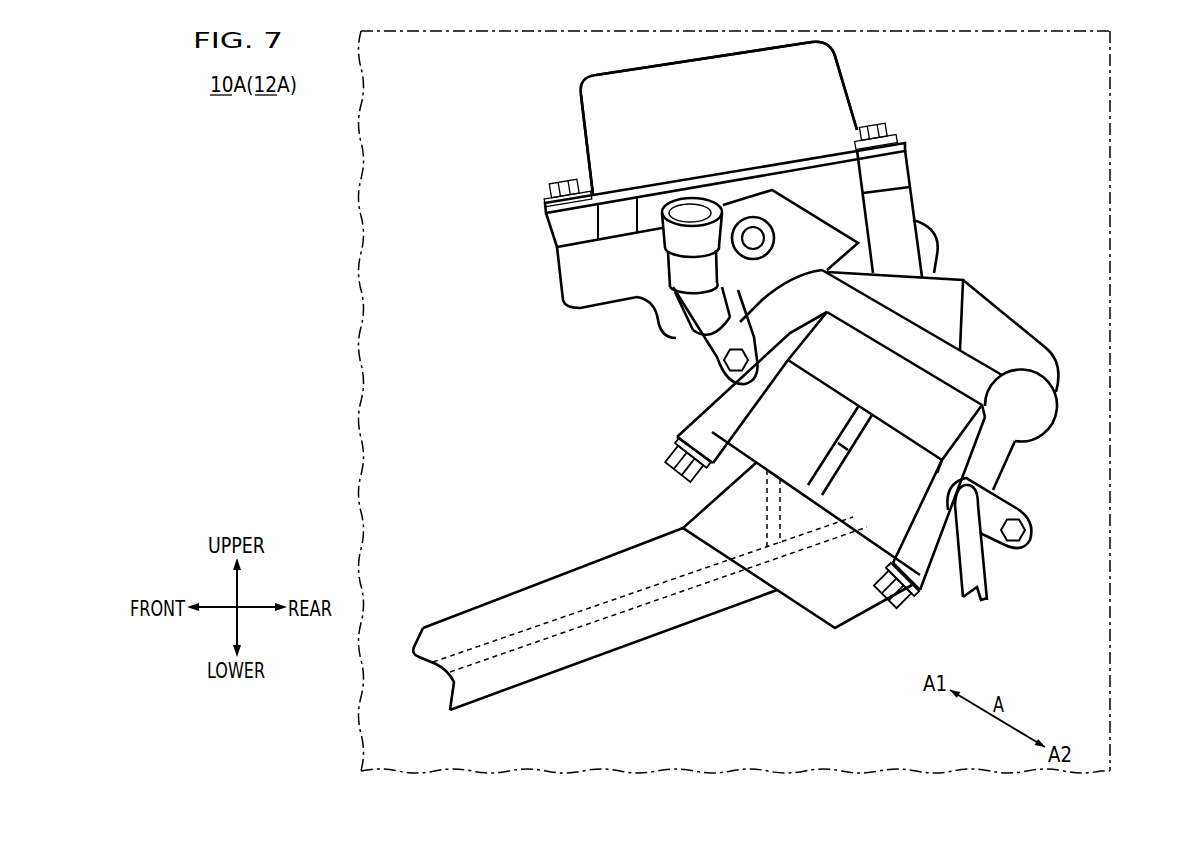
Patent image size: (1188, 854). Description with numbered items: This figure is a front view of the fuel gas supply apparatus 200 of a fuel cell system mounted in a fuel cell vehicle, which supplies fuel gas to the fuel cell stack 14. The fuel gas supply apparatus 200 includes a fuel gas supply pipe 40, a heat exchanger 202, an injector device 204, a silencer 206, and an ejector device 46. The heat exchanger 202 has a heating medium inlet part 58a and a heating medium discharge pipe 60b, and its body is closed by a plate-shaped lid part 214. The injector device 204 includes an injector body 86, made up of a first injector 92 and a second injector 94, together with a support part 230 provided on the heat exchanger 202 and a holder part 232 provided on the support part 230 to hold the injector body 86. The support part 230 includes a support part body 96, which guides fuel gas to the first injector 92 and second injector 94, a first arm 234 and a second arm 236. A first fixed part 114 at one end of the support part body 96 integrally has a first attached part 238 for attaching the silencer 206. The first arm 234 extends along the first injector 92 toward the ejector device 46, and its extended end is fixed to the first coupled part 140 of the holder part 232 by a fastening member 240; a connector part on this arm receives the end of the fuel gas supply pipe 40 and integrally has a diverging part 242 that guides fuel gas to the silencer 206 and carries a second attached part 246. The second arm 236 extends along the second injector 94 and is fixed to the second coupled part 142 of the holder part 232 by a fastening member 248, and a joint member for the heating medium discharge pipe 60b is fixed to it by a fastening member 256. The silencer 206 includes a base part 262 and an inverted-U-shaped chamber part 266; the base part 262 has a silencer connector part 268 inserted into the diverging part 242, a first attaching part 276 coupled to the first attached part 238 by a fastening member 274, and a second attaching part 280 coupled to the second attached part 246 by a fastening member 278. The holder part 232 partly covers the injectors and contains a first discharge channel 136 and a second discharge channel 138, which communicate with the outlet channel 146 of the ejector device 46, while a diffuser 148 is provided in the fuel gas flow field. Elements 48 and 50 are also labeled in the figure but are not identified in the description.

The fuel cell stack 14 is at (1110, 48).
The fuel gas supply pipe 40 is at (670, 257).
The ejector device 46 is at (547, 565).
The clamp arm 48 is at (743, 340).
The bolt 50 is at (742, 363).
The heating medium inlet part 58a is at (750, 217).
The heating medium discharge pipe 60b is at (977, 589).
The injector body 86 is at (937, 472).
The first injector 92 is at (755, 418).
The second injector 94 is at (897, 510).
The support part body 96 is at (962, 375).
The first fixed part 114 is at (930, 250).
The first discharge channel 136 is at (767, 513).
The second discharge channel 138 is at (810, 545).
The first coupled part 140 is at (692, 422).
The second coupled part 142 is at (925, 573).
The outlet channel 146 is at (648, 587).
The diffuser 148 is at (590, 605).
The fuel gas supply apparatus 200 is at (898, 95).
The heat exchanger 202 is at (798, 200).
The injector device 204 is at (972, 292).
The silencer 206 is at (577, 74).
The lid part 214 is at (1042, 357).
The support part 230 is at (1063, 403).
The holder part 232 is at (675, 432).
The first arm 234 is at (803, 287).
The second arm 236 is at (1000, 455).
The first attached part 238 is at (900, 197).
The fastening member 240 is at (683, 462).
The diverging part 242 is at (650, 307).
The second attached part 246 is at (575, 273).
The fastening member 248 is at (898, 590).
The fastening member 256 is at (1013, 532).
The base part 262 is at (903, 143).
The chamber part 266 is at (578, 102).
The silencer connector part 268 is at (650, 202).
The fastening member 274 is at (873, 125).
The first attaching part 276 is at (898, 163).
The fastening member 278 is at (566, 186).
The second attaching part 280 is at (562, 231).